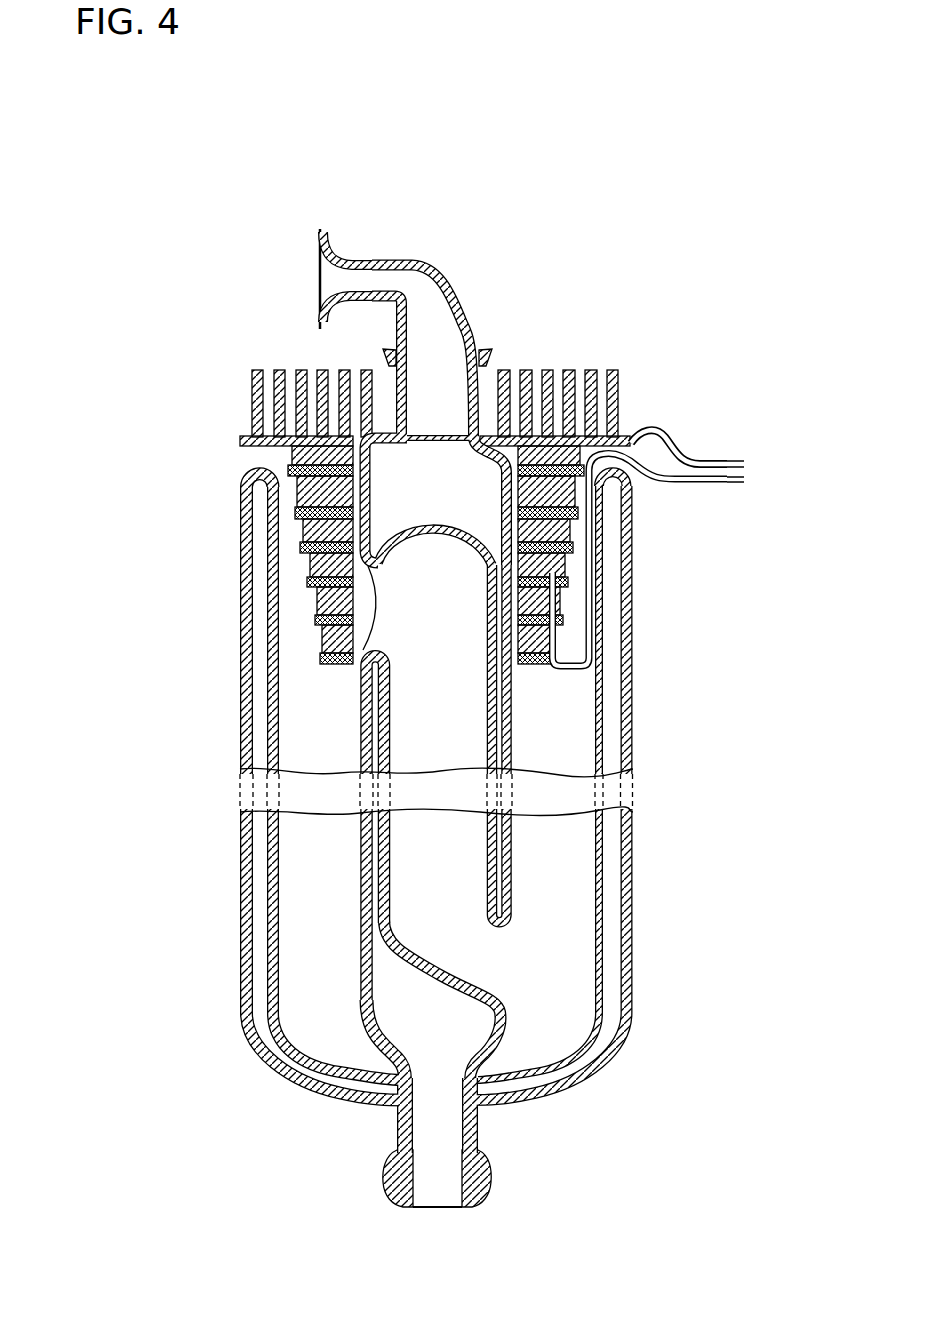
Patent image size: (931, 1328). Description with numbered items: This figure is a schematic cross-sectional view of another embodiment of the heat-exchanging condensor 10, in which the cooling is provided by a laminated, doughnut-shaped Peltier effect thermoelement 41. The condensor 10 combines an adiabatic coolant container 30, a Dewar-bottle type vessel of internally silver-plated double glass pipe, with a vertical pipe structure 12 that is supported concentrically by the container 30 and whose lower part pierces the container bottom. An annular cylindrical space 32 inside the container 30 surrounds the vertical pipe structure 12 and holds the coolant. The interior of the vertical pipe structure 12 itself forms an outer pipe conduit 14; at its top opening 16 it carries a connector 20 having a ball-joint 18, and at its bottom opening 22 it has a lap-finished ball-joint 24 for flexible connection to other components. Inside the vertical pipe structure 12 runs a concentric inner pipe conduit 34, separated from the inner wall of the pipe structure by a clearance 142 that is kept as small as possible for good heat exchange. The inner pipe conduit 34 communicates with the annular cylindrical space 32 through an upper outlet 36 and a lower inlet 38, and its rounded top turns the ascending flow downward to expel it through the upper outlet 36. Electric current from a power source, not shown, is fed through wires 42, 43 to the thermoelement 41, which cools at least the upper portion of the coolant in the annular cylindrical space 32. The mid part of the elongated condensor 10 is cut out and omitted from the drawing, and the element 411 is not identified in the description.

The heat-exchanging condensor 10 is at (338, 232).
The ball-joint 18 is at (320, 290).
The connector 20 is at (427, 265).
The cooling fins 411 is at (303, 370).
The top opening 16 is at (430, 450).
The vertical pipe structure 12 is at (293, 465).
The Peltier effect thermoelement 41 is at (308, 498).
The outer pipe conduit 14 is at (357, 528).
The upper outlet 36 is at (377, 600).
The clearance 142 is at (500, 675).
The inner pipe conduit 34 is at (465, 735).
The lower inlet 38 is at (480, 958).
The adiabatic coolant container 30 is at (242, 597).
The annular cylindrical space 32 is at (292, 707).
The ball-joint 24 is at (488, 1163).
The bottom opening 22 is at (460, 1180).
The wire 42 is at (665, 440).
The wire 43 is at (697, 486).